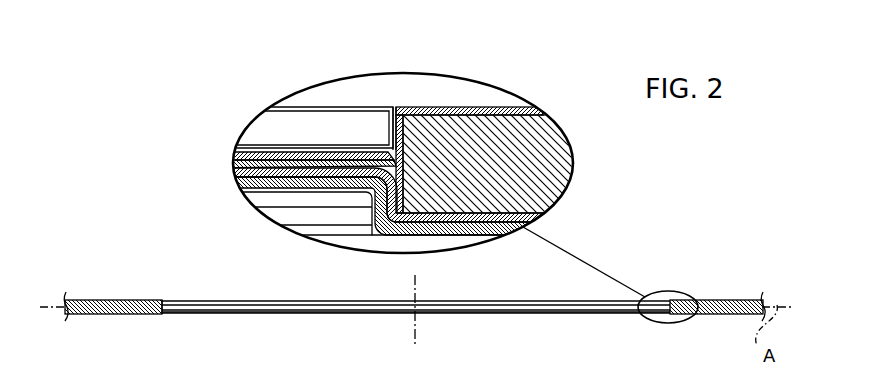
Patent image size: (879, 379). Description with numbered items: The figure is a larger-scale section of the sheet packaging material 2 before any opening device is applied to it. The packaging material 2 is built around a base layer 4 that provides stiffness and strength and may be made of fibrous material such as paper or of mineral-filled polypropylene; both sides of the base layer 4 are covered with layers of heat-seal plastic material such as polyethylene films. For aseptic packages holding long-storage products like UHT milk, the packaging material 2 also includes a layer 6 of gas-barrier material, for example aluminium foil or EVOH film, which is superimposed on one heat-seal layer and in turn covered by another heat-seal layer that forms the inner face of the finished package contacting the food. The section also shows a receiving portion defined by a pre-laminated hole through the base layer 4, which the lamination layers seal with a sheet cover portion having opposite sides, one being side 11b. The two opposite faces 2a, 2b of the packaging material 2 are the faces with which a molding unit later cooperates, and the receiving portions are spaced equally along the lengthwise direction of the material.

The packaging material 2 is at (92, 296).
The face of packaging material 2a is at (738, 318).
The face of packaging material 2b is at (134, 296).
The base layer 4 is at (530, 162).
The layer of gas-barrier material 6 is at (237, 178).
The side of cover portion 11b is at (282, 296).